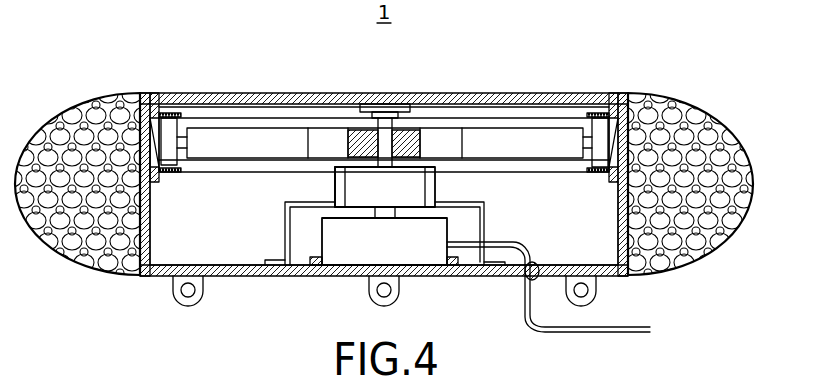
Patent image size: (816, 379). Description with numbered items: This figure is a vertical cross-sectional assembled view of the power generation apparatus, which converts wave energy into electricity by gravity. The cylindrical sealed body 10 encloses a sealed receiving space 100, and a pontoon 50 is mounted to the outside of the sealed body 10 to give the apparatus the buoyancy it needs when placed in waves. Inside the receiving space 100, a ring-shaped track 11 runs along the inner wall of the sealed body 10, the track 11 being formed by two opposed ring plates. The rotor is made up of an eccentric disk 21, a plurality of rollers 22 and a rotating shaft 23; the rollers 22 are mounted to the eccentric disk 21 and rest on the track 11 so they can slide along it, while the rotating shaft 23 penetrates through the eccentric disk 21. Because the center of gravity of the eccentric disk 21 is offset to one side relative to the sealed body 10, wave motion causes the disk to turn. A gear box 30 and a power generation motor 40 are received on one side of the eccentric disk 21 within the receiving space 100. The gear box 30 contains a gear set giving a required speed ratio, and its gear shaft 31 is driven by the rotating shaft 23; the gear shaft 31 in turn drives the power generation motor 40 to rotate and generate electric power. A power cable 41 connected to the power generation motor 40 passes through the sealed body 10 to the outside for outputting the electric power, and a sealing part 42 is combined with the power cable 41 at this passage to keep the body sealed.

The sealed body 10 is at (570, 97).
The track 11 is at (108, 96).
The eccentric disk 21 is at (510, 143).
The rollers 22 is at (660, 93).
The rotating shaft 23 is at (360, 130).
The gear box 30 is at (418, 188).
The gear shaft 31 is at (337, 175).
The power generation motor 40 is at (338, 250).
The power cable 41 is at (590, 333).
The sealing part 42 is at (528, 275).
The pontoon 50 is at (707, 217).
The receiving space 100 is at (563, 232).